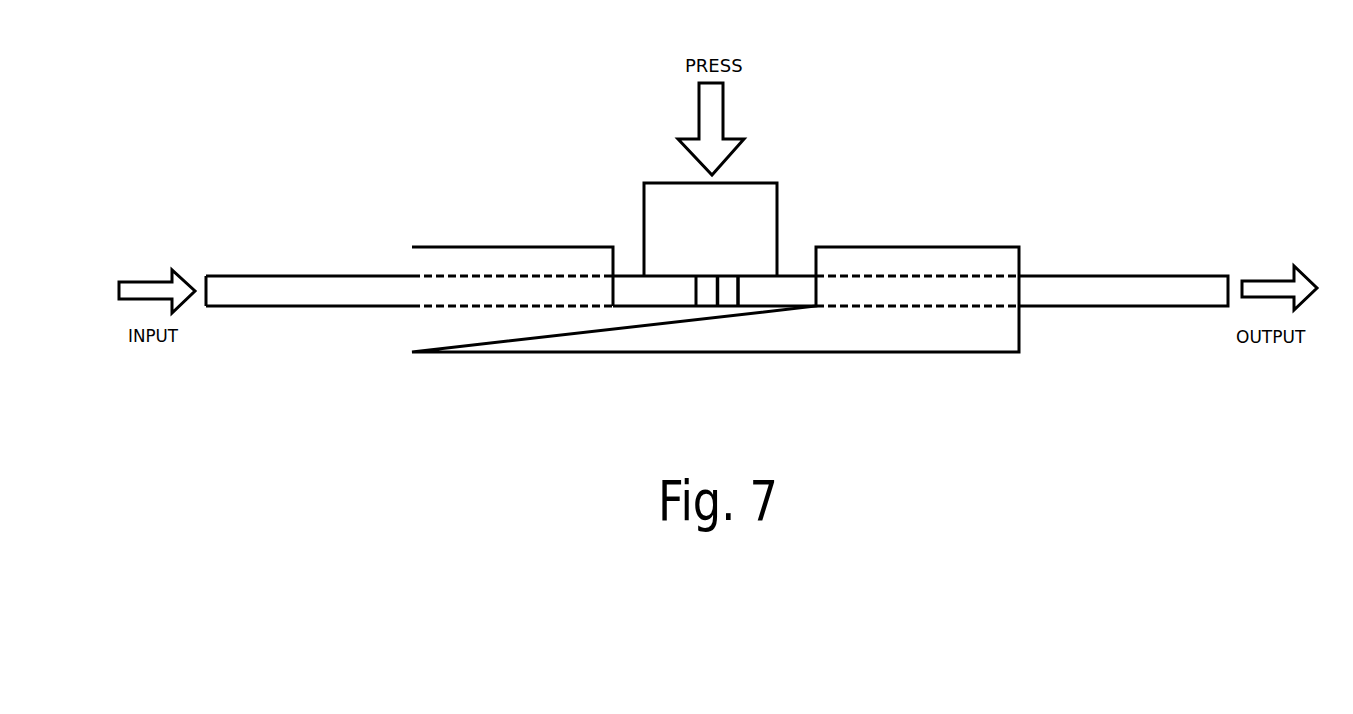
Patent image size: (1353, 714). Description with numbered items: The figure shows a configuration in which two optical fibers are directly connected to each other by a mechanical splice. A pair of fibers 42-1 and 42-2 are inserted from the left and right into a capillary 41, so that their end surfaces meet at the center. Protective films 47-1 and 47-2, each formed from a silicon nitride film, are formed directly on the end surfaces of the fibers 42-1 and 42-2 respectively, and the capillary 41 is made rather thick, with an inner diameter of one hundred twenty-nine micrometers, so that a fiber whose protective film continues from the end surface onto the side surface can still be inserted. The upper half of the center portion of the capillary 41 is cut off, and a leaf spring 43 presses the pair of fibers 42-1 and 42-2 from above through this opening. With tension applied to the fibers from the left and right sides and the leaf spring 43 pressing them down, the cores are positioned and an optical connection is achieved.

The capillary 41 is at (499, 353).
The fiber 42-1 is at (314, 275).
The fiber 42-2 is at (1125, 275).
The leaf spring 43 is at (763, 180).
The protective film 47-1 is at (706, 297).
The protective film 47-2 is at (727, 297).